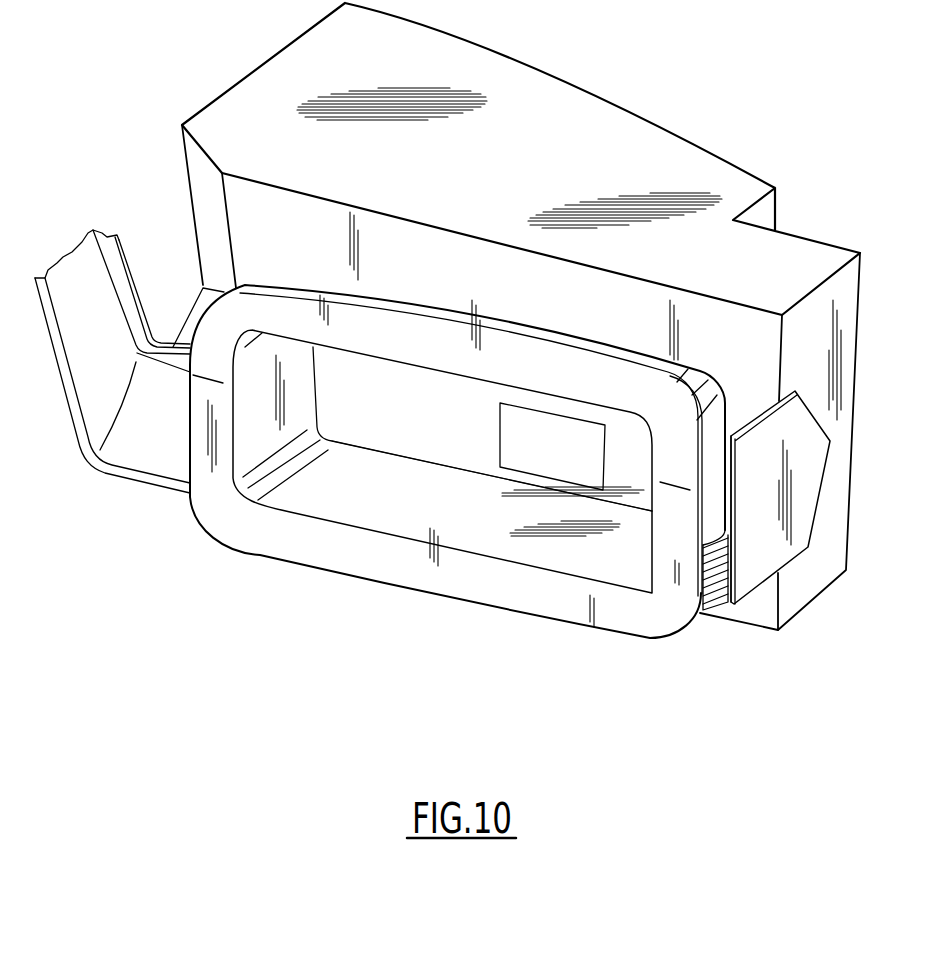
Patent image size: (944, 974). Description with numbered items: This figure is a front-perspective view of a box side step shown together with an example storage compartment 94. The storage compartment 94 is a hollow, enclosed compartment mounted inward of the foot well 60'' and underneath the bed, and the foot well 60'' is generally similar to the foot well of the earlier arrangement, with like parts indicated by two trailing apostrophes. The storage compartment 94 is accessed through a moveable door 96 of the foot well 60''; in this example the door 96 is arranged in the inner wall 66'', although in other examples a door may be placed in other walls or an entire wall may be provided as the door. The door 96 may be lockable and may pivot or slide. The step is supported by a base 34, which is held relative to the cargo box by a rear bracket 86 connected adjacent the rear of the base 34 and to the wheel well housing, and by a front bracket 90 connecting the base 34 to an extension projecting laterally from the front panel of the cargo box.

The storage compartment 94 is at (492, 128).
The rear bracket 86 is at (158, 451).
The foot well 60'' is at (457, 497).
The inner wall 66'' is at (479, 531).
The moveable door 96 is at (536, 455).
The base 34 is at (717, 594).
The front bracket 90 is at (757, 537).